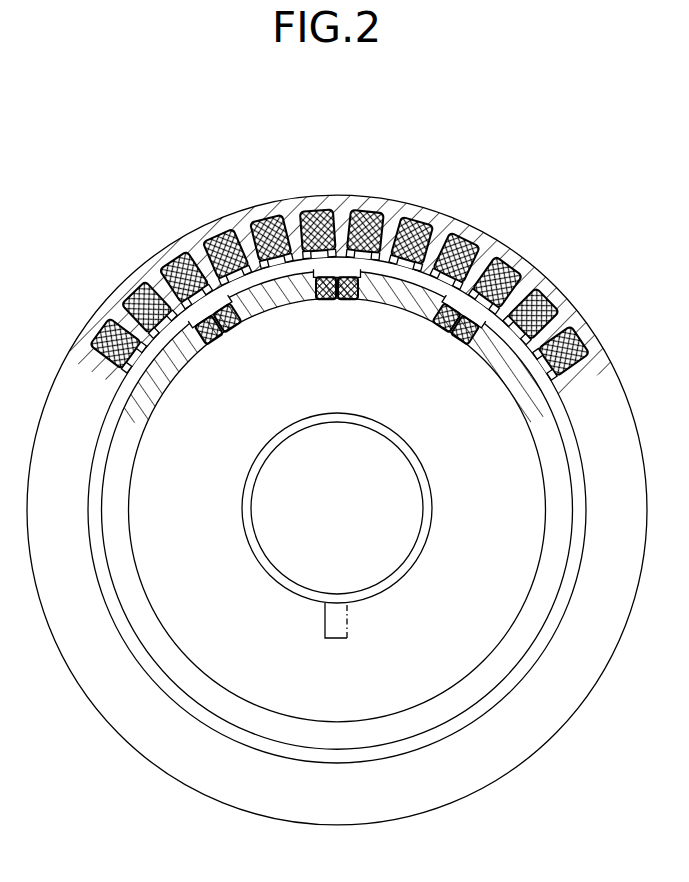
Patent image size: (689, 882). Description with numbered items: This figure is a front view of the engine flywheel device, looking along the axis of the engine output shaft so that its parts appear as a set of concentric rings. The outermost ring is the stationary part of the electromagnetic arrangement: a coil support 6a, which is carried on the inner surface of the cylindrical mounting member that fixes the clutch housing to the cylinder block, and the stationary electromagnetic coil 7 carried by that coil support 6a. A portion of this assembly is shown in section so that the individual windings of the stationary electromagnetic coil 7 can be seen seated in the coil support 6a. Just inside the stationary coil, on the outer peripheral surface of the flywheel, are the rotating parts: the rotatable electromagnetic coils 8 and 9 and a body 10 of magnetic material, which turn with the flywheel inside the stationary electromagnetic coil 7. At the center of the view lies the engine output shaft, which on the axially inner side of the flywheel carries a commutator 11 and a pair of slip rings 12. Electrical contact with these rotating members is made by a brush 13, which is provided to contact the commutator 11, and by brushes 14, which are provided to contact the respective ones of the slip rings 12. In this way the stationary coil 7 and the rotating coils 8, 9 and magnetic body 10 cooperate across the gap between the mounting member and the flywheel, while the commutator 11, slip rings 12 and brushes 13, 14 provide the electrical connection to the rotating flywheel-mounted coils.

The coil support 6a is at (493, 245).
The stationary electromagnetic coil 7 is at (557, 297).
The rotatable electromagnetic coil 8 is at (318, 301).
The rotatable electromagnetic coil 9 is at (347, 301).
The body of magnetic material 10 is at (407, 302).
The commutator 11 is at (416, 563).
The slip rings 12 is at (373, 508).
The brush 13 is at (348, 634).
The brushes 14 is at (388, 644).